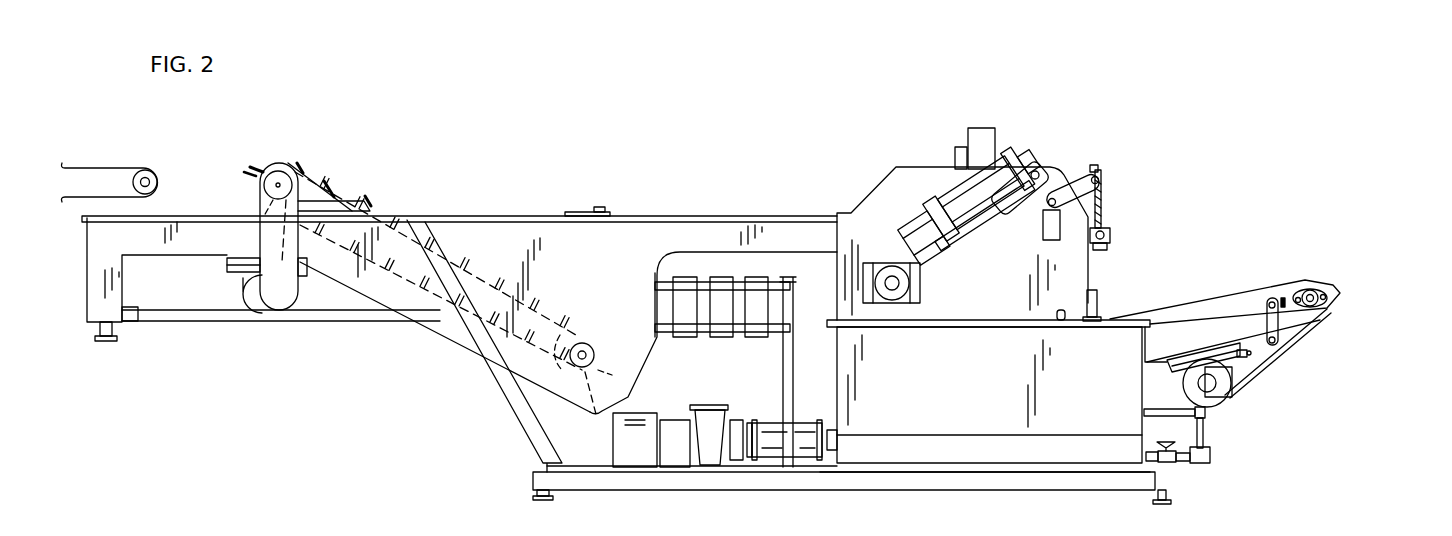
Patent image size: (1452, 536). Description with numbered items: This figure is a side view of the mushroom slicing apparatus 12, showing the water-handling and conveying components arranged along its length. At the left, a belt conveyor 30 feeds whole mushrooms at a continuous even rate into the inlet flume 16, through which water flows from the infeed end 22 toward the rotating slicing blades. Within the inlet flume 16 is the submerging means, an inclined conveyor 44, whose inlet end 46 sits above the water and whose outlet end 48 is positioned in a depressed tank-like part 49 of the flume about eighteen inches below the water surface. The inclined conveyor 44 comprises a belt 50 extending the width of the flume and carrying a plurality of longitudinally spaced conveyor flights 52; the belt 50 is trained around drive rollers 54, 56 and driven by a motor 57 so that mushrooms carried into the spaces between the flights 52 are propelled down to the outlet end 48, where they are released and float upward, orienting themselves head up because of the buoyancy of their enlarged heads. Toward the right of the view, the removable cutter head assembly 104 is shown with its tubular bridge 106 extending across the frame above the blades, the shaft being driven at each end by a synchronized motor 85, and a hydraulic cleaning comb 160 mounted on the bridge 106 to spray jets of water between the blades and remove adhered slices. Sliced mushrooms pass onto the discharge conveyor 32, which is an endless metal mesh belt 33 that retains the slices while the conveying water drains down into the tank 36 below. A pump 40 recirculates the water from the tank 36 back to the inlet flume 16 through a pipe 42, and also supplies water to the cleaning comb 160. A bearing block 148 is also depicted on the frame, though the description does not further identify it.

The mushroom slicing apparatus 12 is at (1116, 162).
The inlet flume 16 is at (190, 228).
The infeed end 22 is at (134, 244).
The belt conveyor 30 is at (104, 162).
The discharge conveyor 32 is at (1225, 306).
The endless metal mesh belt 33 is at (1320, 288).
The tank 36 is at (989, 392).
The pump 40 is at (766, 468).
The pipe 42 is at (204, 322).
The inclined conveyor 44 is at (328, 182).
The inlet end 46 is at (267, 236).
The outlet end 48 is at (590, 414).
The depressed tank-like part 49 is at (437, 342).
The belt 50 is at (338, 202).
The conveyor flights 52 is at (297, 168).
The drive roller 54 is at (258, 184).
The drive roller 56 is at (566, 332).
The motor 57 is at (297, 303).
The synchronized motor 85 is at (924, 238).
The removable cutter head assembly 104 is at (978, 178).
The bridge 106 is at (980, 130).
The bearing block 148 is at (908, 283).
The hydraulic cleaning comb 160 is at (948, 148).